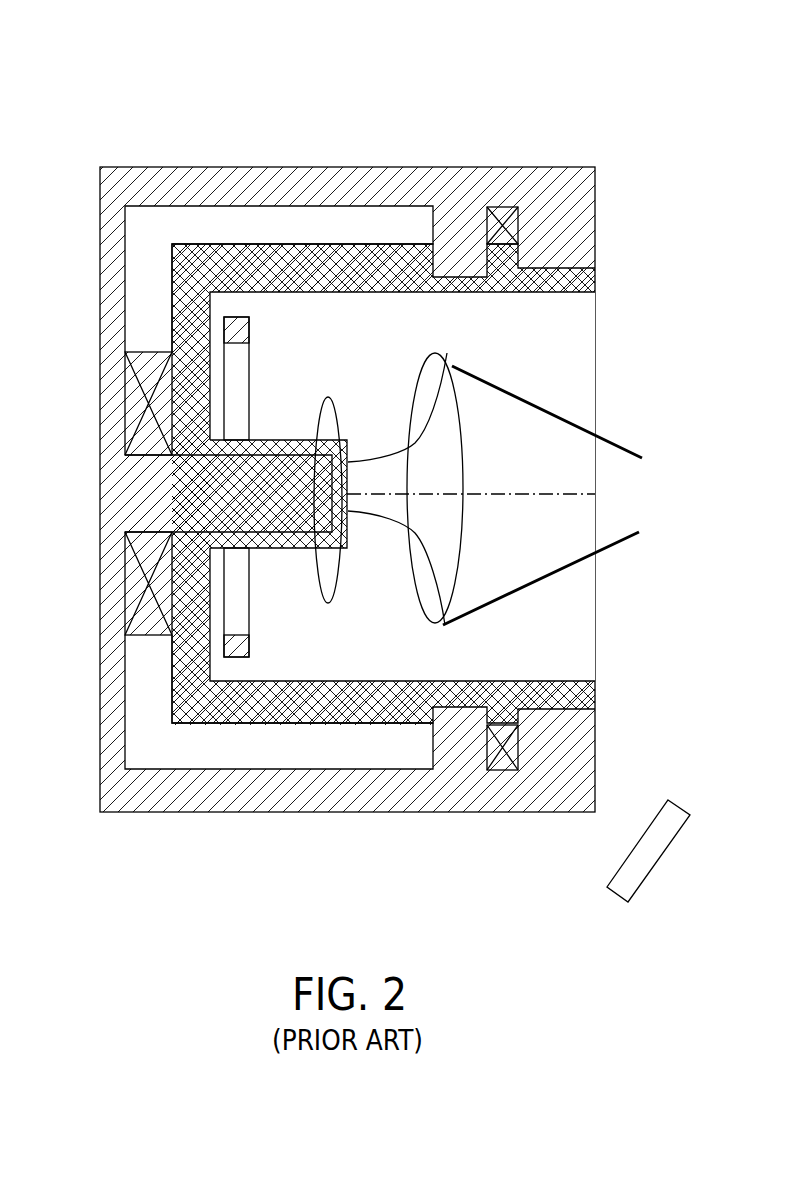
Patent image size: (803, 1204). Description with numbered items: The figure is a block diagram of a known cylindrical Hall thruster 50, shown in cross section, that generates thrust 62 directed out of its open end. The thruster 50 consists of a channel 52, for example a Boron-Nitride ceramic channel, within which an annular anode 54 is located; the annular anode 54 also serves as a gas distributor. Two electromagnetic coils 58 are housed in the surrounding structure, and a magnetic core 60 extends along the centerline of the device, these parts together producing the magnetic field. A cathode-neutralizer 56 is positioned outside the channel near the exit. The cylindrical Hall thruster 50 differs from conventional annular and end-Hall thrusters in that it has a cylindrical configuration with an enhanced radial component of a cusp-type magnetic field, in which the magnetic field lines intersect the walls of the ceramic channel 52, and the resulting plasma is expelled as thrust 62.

The cylindrical Hall thruster 50 is at (370, 466).
The channel 52 is at (595, 282).
The annular anode 54 is at (248, 614).
The cathode-neutralizer 56 is at (660, 860).
The electromagnetic coils 58 is at (505, 210).
The magnetic core 60 is at (262, 465).
The thrust 62 is at (688, 506).